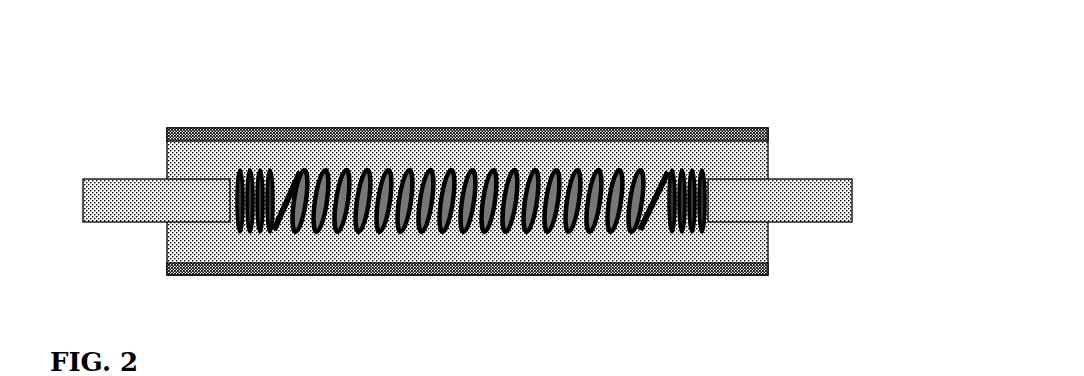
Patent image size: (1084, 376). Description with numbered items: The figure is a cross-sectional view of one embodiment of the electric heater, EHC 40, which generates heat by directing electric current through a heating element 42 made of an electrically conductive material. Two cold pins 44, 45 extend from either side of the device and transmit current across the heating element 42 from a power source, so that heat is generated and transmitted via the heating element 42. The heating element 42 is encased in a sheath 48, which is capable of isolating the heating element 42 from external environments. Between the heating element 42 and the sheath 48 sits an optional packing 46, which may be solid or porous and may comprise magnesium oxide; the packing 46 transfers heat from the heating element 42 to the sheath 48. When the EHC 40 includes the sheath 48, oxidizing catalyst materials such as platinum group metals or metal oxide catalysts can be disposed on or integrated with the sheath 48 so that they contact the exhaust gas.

The EHC 40 is at (800, 107).
The heating element 42 is at (488, 178).
The cold pin 44 is at (97, 198).
The cold pin 45 is at (835, 198).
The packing 46 is at (626, 158).
The sheath 48 is at (168, 128).